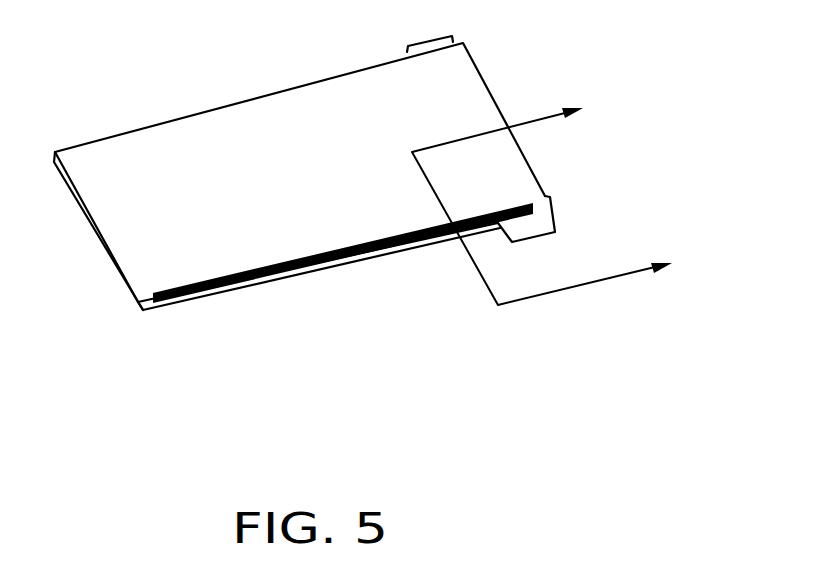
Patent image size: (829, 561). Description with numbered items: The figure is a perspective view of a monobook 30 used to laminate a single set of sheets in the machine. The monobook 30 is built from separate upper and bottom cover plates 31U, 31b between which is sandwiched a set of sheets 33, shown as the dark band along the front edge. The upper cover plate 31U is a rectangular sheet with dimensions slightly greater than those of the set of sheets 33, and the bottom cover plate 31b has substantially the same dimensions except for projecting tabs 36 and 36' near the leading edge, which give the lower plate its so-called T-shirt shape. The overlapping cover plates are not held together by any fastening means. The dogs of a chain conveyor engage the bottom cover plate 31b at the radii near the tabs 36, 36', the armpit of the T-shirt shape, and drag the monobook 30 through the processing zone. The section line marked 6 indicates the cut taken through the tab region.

The monobook 30 is at (357, 188).
The upper cover plate 31U is at (213, 215).
The bottom cover plate 31b is at (143, 311).
The set of sheets 33 is at (220, 299).
The projecting tab 36 is at (579, 213).
The projecting tab 36' is at (477, 26).
The section line 6- 6 is at (556, 198).